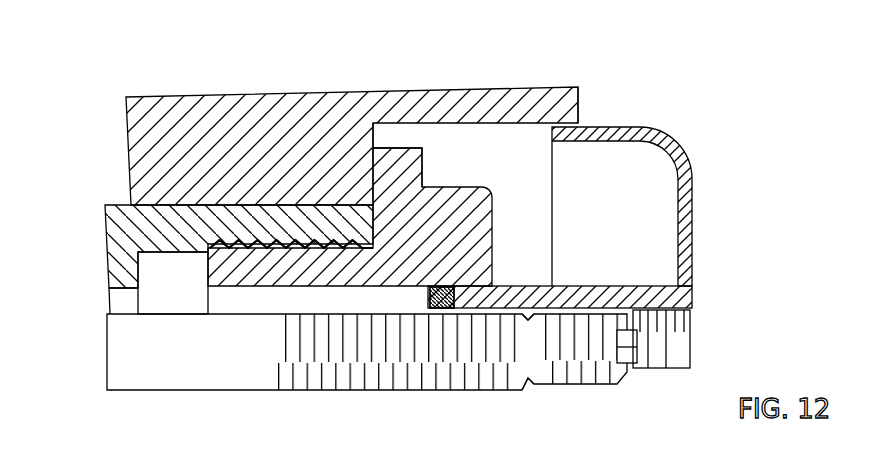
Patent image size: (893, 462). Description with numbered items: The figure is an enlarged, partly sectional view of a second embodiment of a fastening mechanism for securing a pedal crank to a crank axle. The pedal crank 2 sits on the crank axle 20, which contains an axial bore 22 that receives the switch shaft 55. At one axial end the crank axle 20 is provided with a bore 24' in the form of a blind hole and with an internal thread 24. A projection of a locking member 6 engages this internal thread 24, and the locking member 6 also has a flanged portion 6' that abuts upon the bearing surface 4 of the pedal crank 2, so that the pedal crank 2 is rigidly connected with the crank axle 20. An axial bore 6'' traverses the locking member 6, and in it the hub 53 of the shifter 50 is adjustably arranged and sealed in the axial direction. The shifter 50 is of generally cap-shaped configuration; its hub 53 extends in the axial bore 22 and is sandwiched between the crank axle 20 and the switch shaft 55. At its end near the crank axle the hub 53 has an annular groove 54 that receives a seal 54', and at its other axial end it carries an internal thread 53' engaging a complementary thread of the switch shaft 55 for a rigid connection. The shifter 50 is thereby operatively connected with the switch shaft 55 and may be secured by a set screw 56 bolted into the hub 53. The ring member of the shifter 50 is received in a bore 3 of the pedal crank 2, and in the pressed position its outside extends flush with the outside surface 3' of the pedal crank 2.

The pedal crank 2 is at (118, 120).
The bore of the pedal crank 3 is at (526, 165).
The outside surface of the pedal crank 3' is at (599, 82).
The bearing surface 4 is at (377, 129).
The locking member 6 is at (374, 217).
The flanged portion 6' is at (427, 164).
The axial bore of the locking member 6'' is at (291, 299).
The crank axle 20 is at (97, 229).
The axial bore 22 is at (110, 297).
The internal thread 24 is at (286, 299).
The bore in form of a blind hole 24' is at (173, 283).
The shifter 50 is at (703, 192).
The hub 53 is at (560, 263).
The internal thread of the hub 53' is at (700, 339).
The annular groove 54 is at (470, 358).
The seal 54' is at (442, 343).
The switch shaft 55 is at (166, 378).
The set screw 56 is at (558, 380).